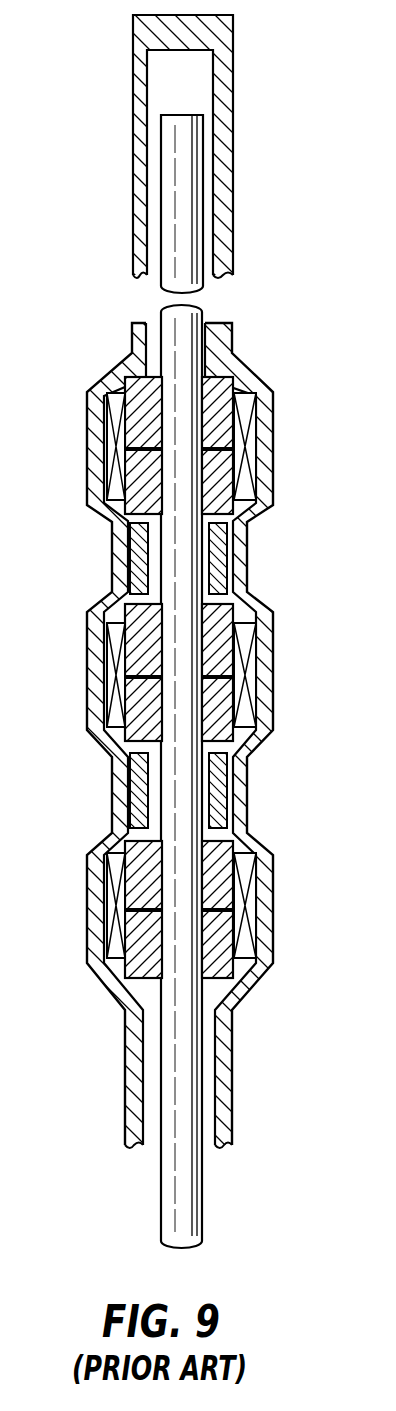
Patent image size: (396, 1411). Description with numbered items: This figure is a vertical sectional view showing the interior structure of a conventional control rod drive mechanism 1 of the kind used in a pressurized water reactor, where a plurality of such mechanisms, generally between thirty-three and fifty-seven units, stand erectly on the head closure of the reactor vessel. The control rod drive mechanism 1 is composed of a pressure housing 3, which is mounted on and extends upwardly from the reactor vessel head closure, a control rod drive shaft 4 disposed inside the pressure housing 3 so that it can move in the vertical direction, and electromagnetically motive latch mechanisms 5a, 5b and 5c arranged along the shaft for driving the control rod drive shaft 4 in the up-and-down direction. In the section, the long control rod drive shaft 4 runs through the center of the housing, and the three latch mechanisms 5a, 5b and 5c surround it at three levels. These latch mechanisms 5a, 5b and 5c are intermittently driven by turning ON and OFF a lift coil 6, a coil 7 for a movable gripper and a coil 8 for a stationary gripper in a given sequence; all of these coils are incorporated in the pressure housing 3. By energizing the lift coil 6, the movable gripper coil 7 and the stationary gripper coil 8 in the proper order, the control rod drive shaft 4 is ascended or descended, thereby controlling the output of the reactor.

The control rod drive mechanism 1 is at (276, 572).
The pressure housing 3 is at (133, 226).
The control rod drive shaft 4 is at (203, 1219).
The electromagnetically motive latch mechanism 5a is at (213, 468).
The electromagnetically motive latch mechanism 5b is at (213, 701).
The electromagnetically motive latch mechanism 5c is at (217, 937).
The lift coil 6 is at (104, 458).
The coil for movable gripper 7 is at (104, 666).
The coil for stationary gripper 8 is at (106, 910).